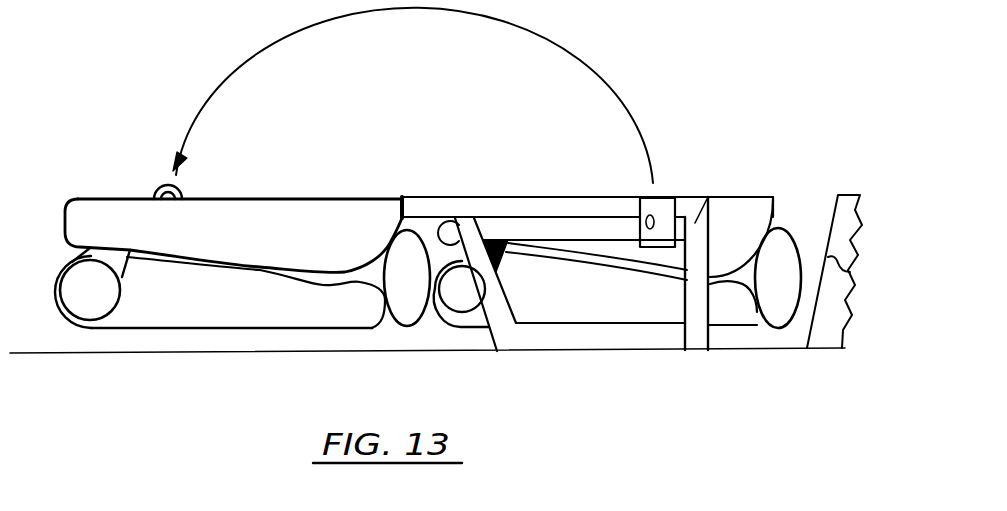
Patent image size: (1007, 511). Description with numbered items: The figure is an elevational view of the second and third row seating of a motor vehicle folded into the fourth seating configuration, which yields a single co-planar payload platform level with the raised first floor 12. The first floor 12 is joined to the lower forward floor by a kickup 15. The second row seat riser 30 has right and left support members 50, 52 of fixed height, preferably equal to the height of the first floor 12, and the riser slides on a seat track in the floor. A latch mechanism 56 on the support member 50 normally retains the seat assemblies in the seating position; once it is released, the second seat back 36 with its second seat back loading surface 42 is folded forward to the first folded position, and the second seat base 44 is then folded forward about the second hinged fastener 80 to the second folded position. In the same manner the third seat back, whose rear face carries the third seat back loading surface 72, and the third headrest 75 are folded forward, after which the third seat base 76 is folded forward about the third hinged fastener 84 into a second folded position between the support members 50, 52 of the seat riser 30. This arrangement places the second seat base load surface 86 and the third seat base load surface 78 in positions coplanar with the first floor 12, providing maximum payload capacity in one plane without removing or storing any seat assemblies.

The first floor 12 is at (858, 192).
The kickup 15 is at (848, 272).
The second row seat riser 30 is at (698, 342).
The second seat back 36 is at (208, 308).
The second seat back loading surface 42 is at (295, 328).
The second seat base 44 is at (268, 218).
The right support member 50 is at (715, 197).
The left support member 52 is at (658, 189).
The latch mechanism 56 is at (658, 197).
The third seat back loading surface 72 is at (740, 327).
The third headrest 75 is at (785, 308).
The third seat base 76 is at (762, 223).
The third seat base load surface 78 is at (687, 197).
The second hinged fastener 80 is at (403, 199).
The third hinged fastener 84 is at (773, 197).
The second seat base load surface 86 is at (228, 200).